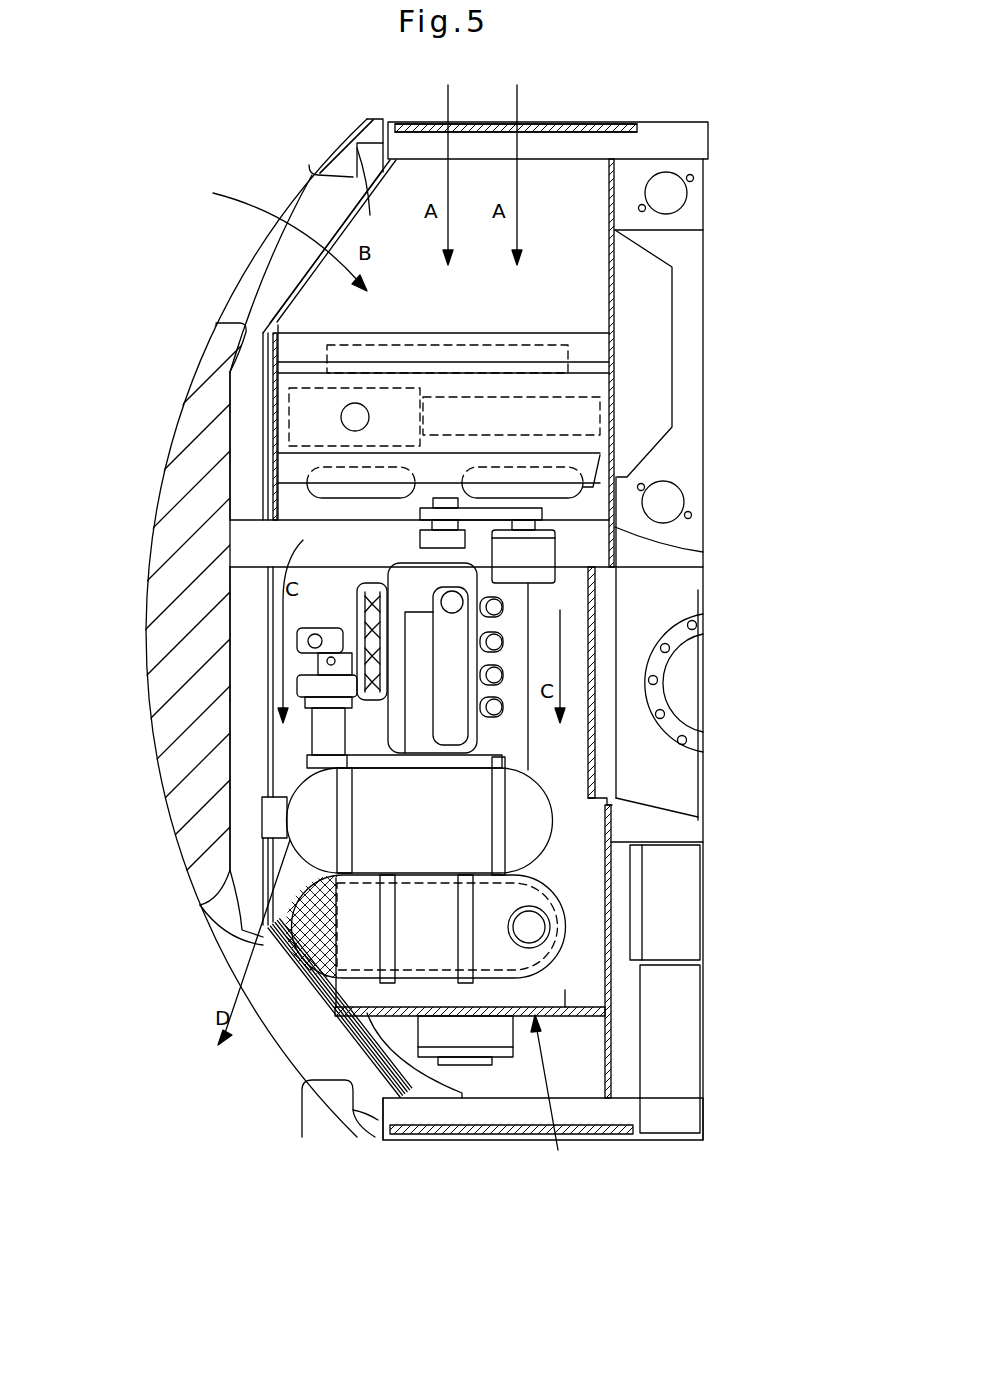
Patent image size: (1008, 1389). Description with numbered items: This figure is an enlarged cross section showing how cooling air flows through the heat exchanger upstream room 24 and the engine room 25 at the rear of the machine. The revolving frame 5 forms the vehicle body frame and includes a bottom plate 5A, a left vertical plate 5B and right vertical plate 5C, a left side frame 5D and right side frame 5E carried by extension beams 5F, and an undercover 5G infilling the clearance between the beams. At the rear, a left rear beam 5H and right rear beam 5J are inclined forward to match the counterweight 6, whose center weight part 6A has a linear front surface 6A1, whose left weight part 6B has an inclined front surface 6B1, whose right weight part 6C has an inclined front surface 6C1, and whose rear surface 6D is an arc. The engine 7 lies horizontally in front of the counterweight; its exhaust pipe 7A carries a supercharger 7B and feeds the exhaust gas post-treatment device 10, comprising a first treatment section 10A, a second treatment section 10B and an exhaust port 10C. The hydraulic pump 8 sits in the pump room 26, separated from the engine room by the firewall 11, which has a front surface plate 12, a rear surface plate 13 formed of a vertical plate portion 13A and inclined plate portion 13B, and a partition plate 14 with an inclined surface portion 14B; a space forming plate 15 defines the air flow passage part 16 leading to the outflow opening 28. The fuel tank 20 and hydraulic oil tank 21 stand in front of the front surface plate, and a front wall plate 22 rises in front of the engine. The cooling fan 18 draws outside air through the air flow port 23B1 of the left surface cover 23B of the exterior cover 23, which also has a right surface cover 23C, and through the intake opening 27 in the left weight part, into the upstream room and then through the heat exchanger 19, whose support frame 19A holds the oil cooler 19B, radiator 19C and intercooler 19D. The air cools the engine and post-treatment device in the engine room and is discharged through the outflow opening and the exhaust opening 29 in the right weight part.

The revolving frame 5 is at (672, 590).
The bottom plate 5A is at (673, 783).
The left vertical plate 5B is at (660, 552).
The right vertical plate 5C is at (612, 800).
The left side frame 5D is at (665, 140).
The right side frame 5E is at (655, 1137).
The extension beams 5F is at (688, 318).
The undercover 5G is at (567, 190).
The left rear beam 5H is at (290, 302).
The right rear beam 5J is at (325, 1080).
The counterweight 6 is at (160, 598).
The center weight part 6A is at (160, 560).
The front surface of the center weight part 6A1 is at (245, 605).
The left weight part 6B is at (333, 150).
The front surface of the left weight part 6B1 is at (357, 143).
The right weight part 6C is at (327, 1102).
The front surface of the right weight part 6C1 is at (340, 1093).
The rear surface of the counterweight 6D is at (150, 707).
The engine 7 is at (513, 650).
The exhaust pipe 7A is at (325, 738).
The supercharger 7B is at (305, 680).
The hydraulic pump 8 is at (473, 1033).
The exhaust gas post-treatment device 10 is at (600, 889).
The first treatment section 10A is at (528, 843).
The second treatment section 10B is at (533, 960).
The exhaust port 10C is at (552, 925).
The firewall 11 is at (552, 1116).
The front surface plate 12 is at (613, 992).
The rear surface plate 13 is at (315, 1025).
The vertical plate portion 13A is at (263, 862).
The inclined plate portion 13B is at (362, 1060).
The partition plate 14 is at (442, 992).
The inclined surface portion 14B is at (565, 990).
The space forming plate 15 is at (300, 985).
The air flow passage part 16 is at (295, 908).
The cooling fan 18 is at (343, 497).
The heat exchanger 19 is at (590, 383).
The support frame 19A is at (290, 388).
The oil cooler 19B is at (600, 416).
The radiator 19C is at (300, 418).
The intercooler 19D is at (542, 345).
The fuel tank 20 is at (677, 1060).
The hydraulic oil tank 21 is at (680, 912).
The front wall plate 22 is at (595, 703).
The exterior cover 23 is at (605, 125).
The left surface cover 23B is at (408, 128).
The air flow port 23B1 is at (482, 128).
The right surface cover 23C is at (515, 1128).
The heat exchanger upstream room 24 is at (563, 222).
The engine room 25 is at (563, 753).
The pump room 26 is at (457, 1077).
The intake opening 27 is at (275, 258).
The outflow opening 28 is at (283, 935).
The exhaust opening 29 is at (250, 970).